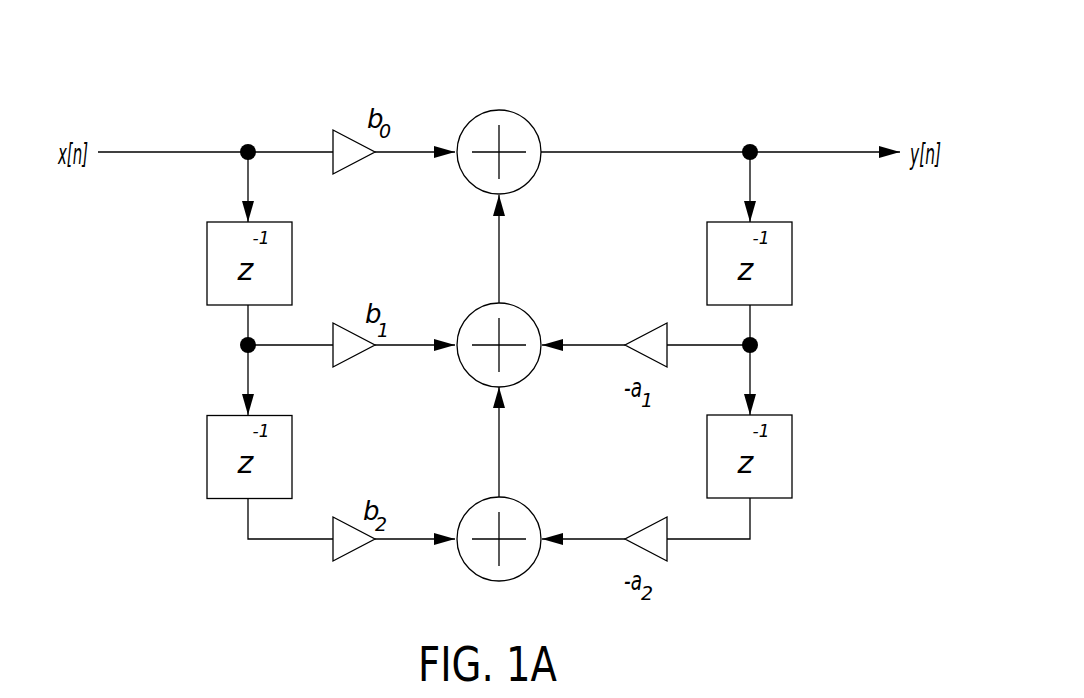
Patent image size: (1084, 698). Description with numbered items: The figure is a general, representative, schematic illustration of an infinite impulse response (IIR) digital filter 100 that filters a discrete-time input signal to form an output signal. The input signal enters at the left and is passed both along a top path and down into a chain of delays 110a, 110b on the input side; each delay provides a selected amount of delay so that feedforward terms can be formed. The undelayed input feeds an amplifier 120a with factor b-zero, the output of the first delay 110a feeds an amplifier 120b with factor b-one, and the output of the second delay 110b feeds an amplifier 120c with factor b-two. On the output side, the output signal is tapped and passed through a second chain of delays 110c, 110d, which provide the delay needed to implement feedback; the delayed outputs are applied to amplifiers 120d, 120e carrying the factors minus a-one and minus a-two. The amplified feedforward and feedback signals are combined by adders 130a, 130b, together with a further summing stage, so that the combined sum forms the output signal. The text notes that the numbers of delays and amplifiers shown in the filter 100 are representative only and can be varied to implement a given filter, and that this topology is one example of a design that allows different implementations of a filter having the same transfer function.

The IIR digital filter 100 is at (824, 88).
The delay 110a is at (207, 262).
The delay 110b is at (207, 458).
The delay 110c is at (792, 262).
The delay 110d is at (792, 457).
The amplifier 120a is at (343, 130).
The amplifier 120b is at (343, 323).
The amplifier 120c is at (343, 517).
The amplifier 120d is at (645, 333).
The amplifier 120e is at (645, 527).
The adder 130a is at (520, 118).
The adder 130b is at (520, 310).